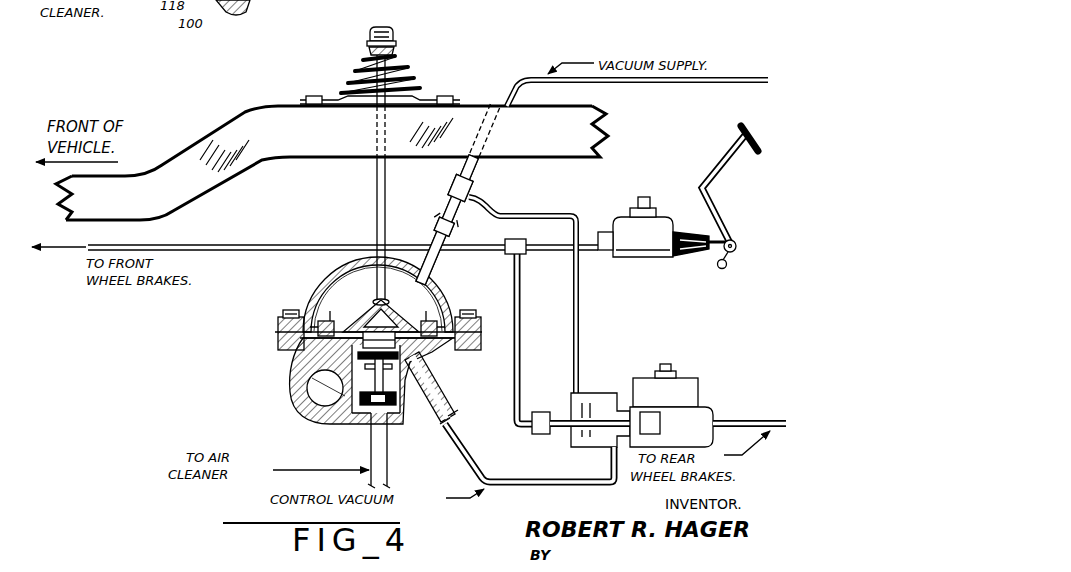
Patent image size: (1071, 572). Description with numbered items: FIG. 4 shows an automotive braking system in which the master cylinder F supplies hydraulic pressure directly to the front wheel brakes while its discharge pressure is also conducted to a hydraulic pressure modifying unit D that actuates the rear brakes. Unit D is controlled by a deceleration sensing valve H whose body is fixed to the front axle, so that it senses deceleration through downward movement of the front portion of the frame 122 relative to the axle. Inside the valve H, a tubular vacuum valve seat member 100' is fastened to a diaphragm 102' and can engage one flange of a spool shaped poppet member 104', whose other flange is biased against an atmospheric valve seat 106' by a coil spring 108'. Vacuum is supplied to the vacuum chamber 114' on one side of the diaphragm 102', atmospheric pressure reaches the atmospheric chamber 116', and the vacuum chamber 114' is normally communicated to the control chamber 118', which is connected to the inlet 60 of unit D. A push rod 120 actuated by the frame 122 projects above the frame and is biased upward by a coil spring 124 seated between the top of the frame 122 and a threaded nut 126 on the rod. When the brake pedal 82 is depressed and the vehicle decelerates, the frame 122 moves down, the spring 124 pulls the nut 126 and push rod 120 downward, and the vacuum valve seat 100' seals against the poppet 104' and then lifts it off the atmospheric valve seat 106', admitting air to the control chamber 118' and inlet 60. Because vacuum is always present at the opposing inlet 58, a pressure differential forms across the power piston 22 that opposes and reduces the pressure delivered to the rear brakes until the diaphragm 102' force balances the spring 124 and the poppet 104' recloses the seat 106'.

The power piston 22 is at (591, 403).
The opposing inlet 58 is at (578, 326).
The inlet connection 60 is at (612, 461).
The brake pedal 82 is at (750, 132).
The pressure modifying unit D is at (699, 377).
The master cylinder F is at (643, 192).
The deceleration sensing valve H is at (268, 330).
The vacuum valve seat member 100' is at (321, 361).
The diaphragm 102' is at (398, 294).
The poppet member 104' is at (422, 401).
The atmospheric valve seat 106' is at (296, 400).
The coil spring 108' is at (320, 381).
The vacuum chamber 114' is at (371, 294).
The atmospheric chamber 116' is at (371, 413).
The control chamber 118' is at (334, 335).
The push rod 120 is at (375, 198).
The frame 122 is at (513, 150).
The coil spring 124 is at (400, 62).
The threaded nut 126 is at (395, 33).